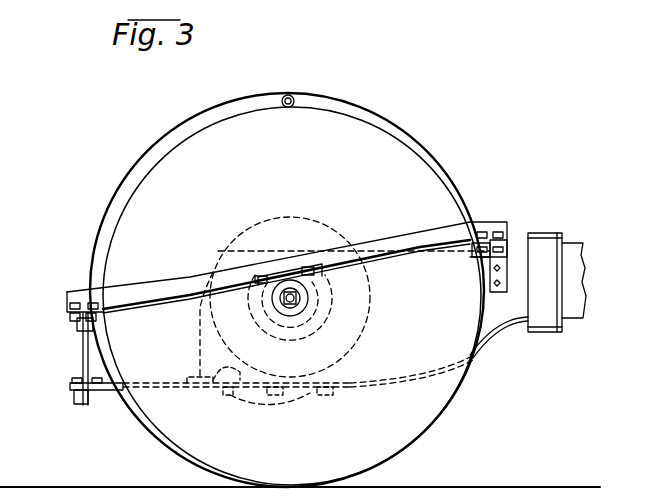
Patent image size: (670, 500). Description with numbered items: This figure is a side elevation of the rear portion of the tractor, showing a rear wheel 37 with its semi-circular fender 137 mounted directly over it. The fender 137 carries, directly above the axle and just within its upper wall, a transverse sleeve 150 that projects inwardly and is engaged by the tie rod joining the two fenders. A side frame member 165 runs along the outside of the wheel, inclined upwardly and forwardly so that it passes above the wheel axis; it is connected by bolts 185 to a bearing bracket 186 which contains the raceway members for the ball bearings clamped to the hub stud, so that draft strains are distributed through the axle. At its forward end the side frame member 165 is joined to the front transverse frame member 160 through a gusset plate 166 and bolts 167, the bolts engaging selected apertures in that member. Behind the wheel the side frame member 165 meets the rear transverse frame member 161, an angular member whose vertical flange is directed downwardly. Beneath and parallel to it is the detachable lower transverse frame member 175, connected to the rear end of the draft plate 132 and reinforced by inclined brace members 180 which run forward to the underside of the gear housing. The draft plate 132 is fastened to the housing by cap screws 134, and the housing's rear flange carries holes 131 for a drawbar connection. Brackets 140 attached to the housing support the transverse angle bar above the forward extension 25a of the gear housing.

The wheel 37 is at (445, 403).
The fender 137 is at (128, 187).
The transverse sleeve 150 is at (296, 94).
The side frame member 165 is at (165, 280).
The rear transverse frame member 161 is at (78, 320).
The inclined brace member 180 is at (110, 380).
The draft plate 132 is at (111, 392).
The lower transverse frame member 175 is at (74, 393).
The bearing bracket 186 is at (312, 290).
The bolt 185 is at (308, 266).
The bolt 167 is at (481, 232).
The gusset plate 166 is at (498, 238).
The front transverse frame member 160 is at (476, 257).
The bracket 140 is at (509, 252).
The forward extension of the gear housing 25a is at (506, 320).
The holes 131 is at (199, 336).
The cap screw or bolt 134 is at (273, 394).